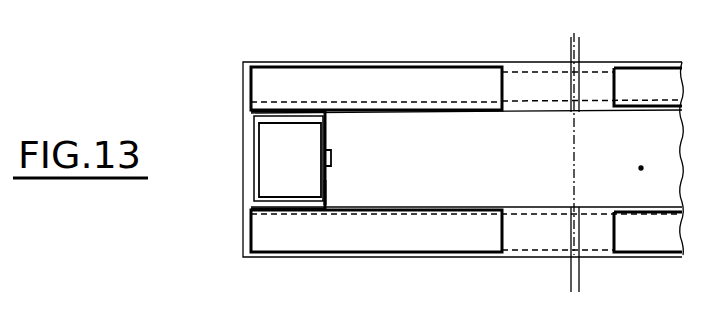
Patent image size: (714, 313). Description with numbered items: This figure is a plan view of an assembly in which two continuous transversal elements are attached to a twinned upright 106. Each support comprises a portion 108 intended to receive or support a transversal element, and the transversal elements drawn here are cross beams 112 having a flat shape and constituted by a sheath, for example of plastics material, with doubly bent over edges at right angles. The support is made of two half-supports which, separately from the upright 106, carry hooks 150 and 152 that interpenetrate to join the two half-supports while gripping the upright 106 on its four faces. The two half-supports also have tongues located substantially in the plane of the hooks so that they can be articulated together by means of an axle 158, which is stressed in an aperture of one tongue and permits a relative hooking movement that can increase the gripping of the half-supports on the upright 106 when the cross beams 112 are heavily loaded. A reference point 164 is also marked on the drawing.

The upright 106 is at (276, 172).
The portion of support intended to receive a transversal element 108 is at (441, 66).
The cross beam 112 is at (535, 63).
The hook 150 is at (326, 192).
The hook 152 is at (325, 131).
The axle 158 is at (332, 158).
The center point 164 is at (643, 158).